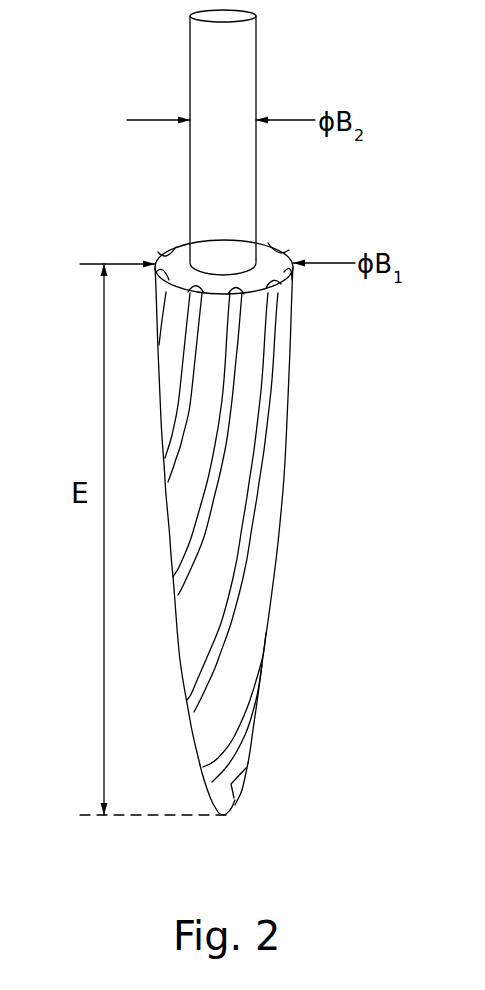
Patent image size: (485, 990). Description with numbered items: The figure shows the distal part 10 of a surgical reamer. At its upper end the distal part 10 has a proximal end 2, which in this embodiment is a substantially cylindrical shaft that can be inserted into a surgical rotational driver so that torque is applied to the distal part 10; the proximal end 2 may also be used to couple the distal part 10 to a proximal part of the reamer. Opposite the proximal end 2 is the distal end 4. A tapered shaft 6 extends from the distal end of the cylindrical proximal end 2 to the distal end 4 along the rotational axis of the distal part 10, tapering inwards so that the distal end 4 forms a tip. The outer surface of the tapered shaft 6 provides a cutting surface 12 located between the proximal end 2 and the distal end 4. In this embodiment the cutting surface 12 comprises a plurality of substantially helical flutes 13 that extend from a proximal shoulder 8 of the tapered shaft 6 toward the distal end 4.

The proximal end 2 is at (252, 67).
The distal end 4 is at (238, 814).
The tapered shaft 6 is at (256, 554).
The proximal shoulder 8 is at (192, 290).
The distal part 10 is at (199, 425).
The cutting surface 12 is at (243, 572).
The helical flutes 13 is at (174, 292).